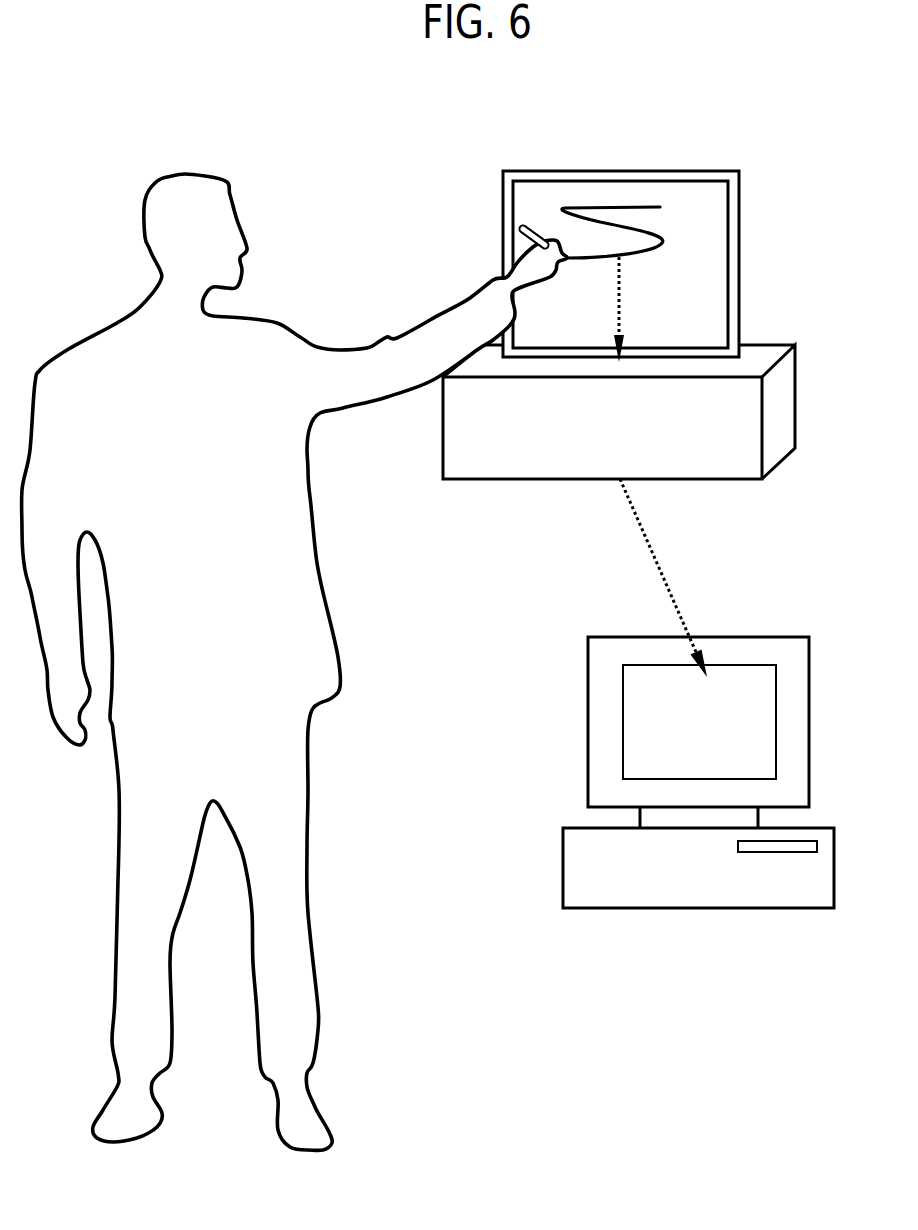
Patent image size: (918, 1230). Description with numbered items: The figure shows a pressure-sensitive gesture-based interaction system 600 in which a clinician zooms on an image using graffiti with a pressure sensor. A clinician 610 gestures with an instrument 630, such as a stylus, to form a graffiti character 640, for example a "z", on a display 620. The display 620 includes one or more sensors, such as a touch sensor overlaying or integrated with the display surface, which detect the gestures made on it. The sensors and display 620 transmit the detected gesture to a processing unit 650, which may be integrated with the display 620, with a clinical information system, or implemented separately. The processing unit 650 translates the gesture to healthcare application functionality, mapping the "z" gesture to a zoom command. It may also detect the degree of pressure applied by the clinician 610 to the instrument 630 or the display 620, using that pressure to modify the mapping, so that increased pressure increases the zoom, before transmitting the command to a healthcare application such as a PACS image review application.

The pressure-sensitive gesture-based interaction system 600 is at (194, 66).
The clinician 610 is at (107, 327).
The display 620 is at (713, 172).
The instrument 630 is at (518, 228).
The graffiti character 640 is at (568, 182).
The processing unit 650 is at (587, 682).